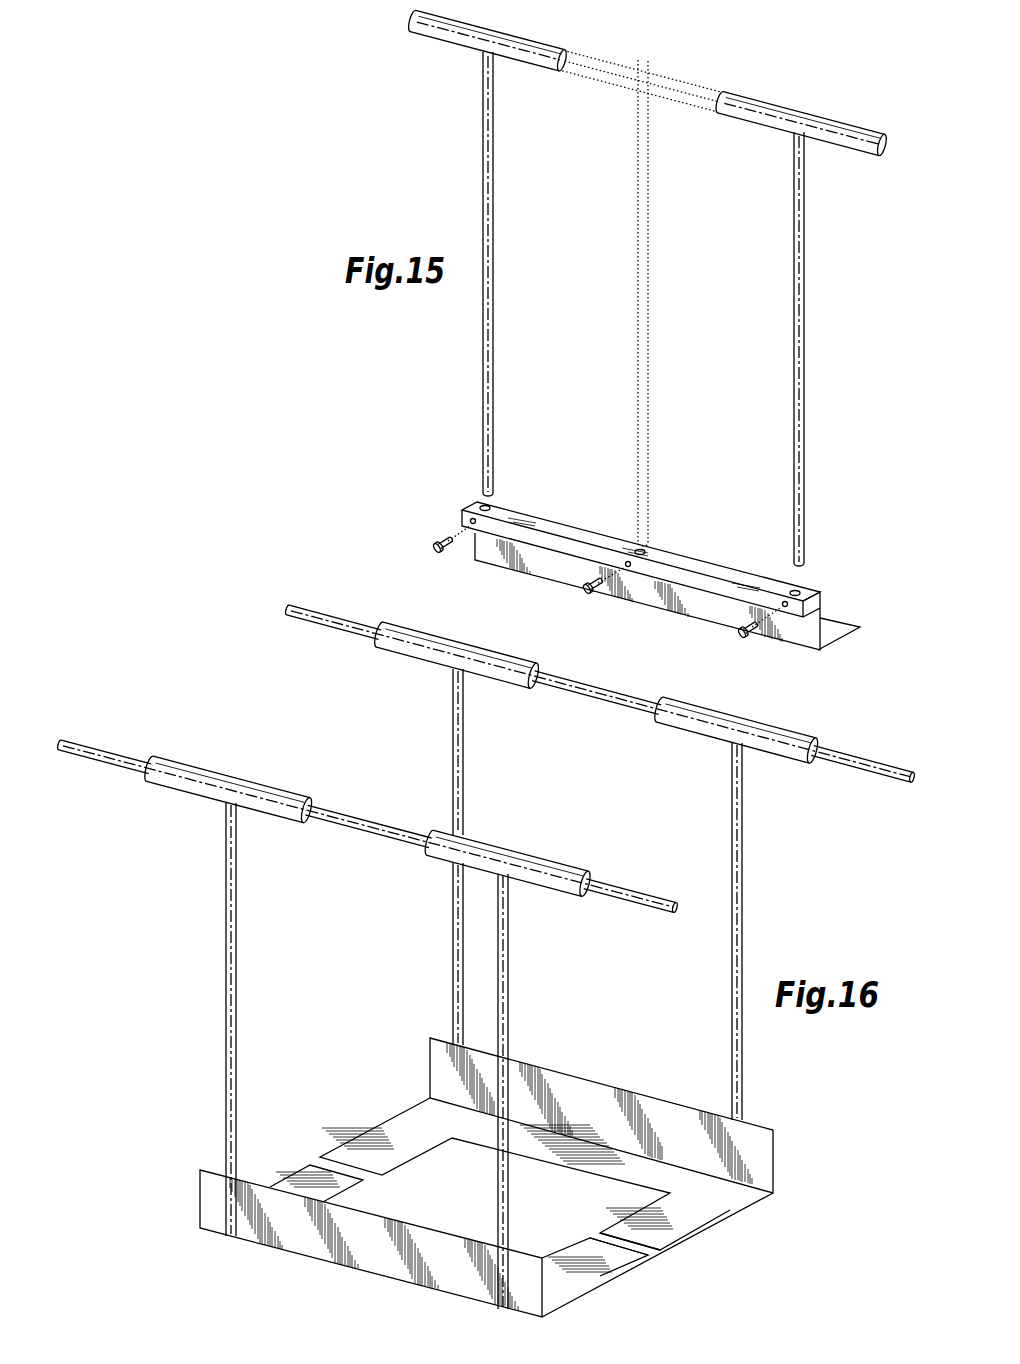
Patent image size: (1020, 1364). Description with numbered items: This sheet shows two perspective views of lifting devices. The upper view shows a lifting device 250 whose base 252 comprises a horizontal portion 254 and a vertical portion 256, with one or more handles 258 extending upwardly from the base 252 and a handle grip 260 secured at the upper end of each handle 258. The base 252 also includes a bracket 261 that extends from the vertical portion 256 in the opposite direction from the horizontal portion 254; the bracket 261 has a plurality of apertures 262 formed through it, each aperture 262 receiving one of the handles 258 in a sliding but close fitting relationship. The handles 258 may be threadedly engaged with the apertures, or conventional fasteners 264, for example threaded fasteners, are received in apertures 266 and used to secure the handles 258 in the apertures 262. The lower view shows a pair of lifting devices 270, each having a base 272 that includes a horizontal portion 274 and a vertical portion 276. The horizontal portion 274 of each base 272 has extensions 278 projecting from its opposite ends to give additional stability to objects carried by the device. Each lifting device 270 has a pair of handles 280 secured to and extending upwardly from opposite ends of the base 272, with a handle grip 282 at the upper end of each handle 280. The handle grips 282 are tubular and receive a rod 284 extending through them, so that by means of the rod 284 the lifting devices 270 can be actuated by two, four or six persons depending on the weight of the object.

In FIG. 15, the lifting device 250 is at (460, 164).
In FIG. 15, the handle grip 260 is at (436, 45).
In FIG. 15, the handle 258 is at (476, 342).
In FIG. 15, the base 252 is at (587, 561).
In FIG. 15, the bracket 261 is at (567, 530).
In FIG. 15, the aperture 262 is at (482, 504).
In FIG. 15, the vertical portion 256 is at (666, 598).
In FIG. 15, the horizontal portion 254 is at (840, 625).
In FIG. 15, the fastener 264 is at (430, 556).
In FIG. 15, the aperture 266 is at (472, 526).
In FIG. 16, the lifting device 270 is at (436, 761).
In FIG. 16, the handle grip 282 is at (430, 668).
In FIG. 16, the rod 284 is at (605, 700).
In FIG. 16, the handle 280 is at (446, 962).
In FIG. 16, the base 272 is at (486, 1158).
In FIG. 16, the vertical portion 276 is at (575, 1098).
In FIG. 16, the horizontal portion 274 is at (424, 1117).
In FIG. 16, the extension 278 is at (350, 1152).